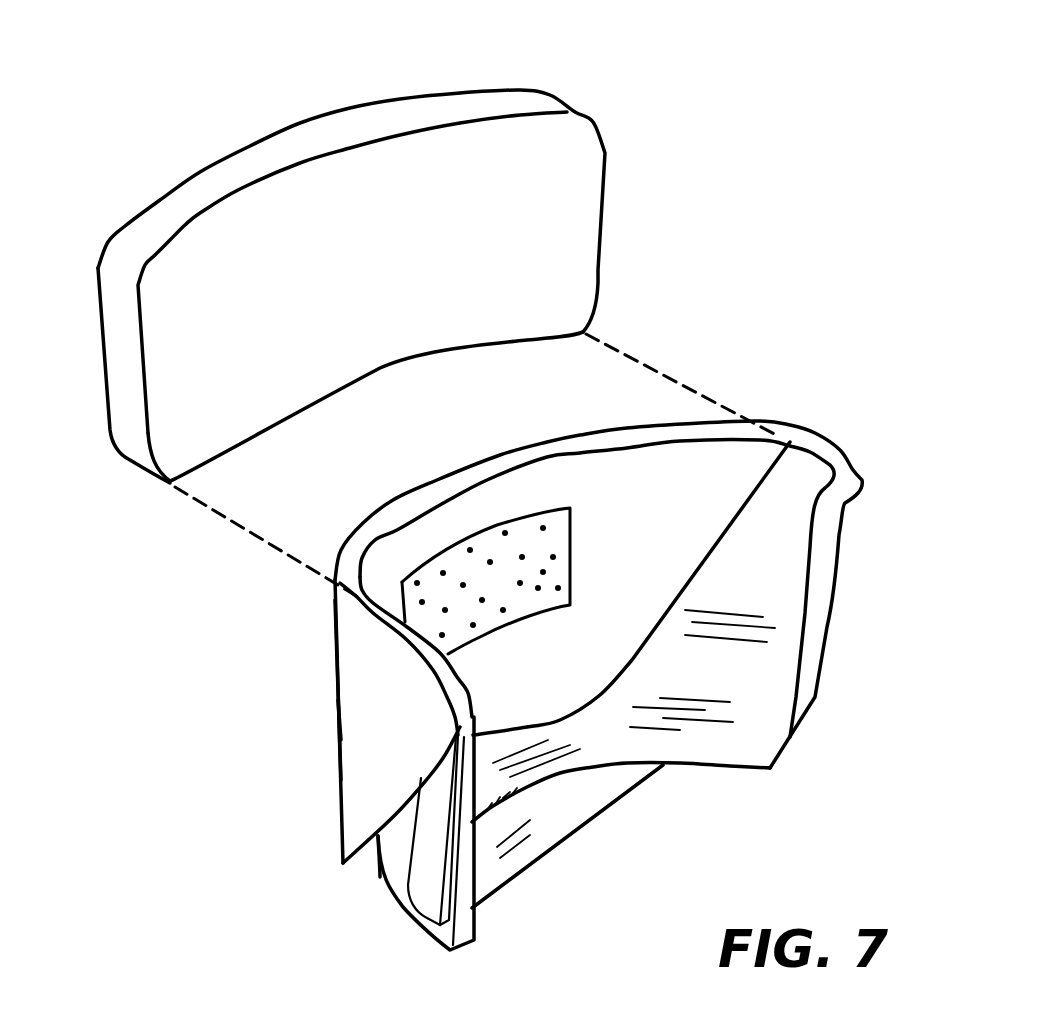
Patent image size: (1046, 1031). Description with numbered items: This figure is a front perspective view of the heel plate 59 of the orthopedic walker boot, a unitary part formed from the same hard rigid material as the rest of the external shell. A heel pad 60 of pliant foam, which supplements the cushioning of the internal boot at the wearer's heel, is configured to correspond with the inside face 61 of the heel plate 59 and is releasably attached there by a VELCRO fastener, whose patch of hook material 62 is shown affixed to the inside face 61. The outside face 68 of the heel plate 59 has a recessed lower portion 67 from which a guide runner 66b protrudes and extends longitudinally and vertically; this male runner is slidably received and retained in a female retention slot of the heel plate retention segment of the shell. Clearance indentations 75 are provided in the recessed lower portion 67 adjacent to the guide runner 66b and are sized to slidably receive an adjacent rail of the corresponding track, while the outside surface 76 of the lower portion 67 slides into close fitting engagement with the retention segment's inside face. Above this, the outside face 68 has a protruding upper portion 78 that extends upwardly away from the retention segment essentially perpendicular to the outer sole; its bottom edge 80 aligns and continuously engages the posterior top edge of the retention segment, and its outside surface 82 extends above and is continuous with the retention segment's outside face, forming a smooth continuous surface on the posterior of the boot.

The heel plate 59 is at (827, 627).
The heel pad 60 is at (428, 118).
The inside face 61 is at (697, 495).
The patch of hook material 62 is at (482, 548).
The outside surface 82 is at (337, 625).
The outside face 68 is at (337, 670).
The protruding upper portion 78 is at (367, 715).
The bottom edge 80 is at (365, 842).
The recessed lower portion 67 is at (392, 863).
The outside surface 76 is at (384, 879).
The clearance indentations 75 is at (403, 880).
The guide runner 66b is at (427, 900).